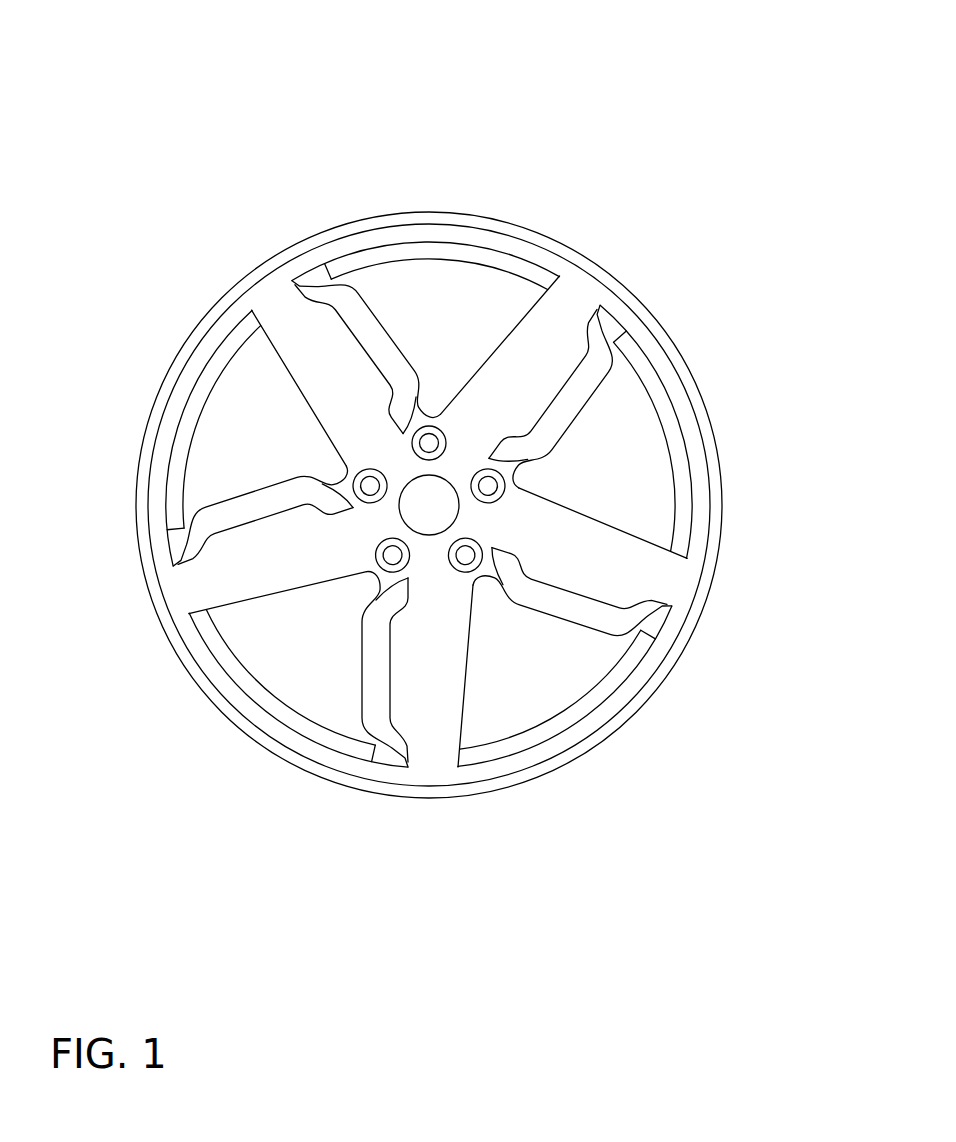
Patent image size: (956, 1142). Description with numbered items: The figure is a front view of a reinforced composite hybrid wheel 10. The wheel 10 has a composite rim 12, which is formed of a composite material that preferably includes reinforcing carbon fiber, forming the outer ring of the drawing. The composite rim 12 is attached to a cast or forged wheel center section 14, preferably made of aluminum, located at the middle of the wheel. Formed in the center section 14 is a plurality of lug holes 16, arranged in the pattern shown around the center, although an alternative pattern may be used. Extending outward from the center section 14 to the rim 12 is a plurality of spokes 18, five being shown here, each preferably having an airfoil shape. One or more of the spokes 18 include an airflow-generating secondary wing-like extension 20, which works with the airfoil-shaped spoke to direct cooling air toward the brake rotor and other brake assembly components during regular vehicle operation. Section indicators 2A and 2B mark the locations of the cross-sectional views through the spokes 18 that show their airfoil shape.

The reinforced composite hybrid wheel 10 is at (735, 122).
The composite rim 12 is at (690, 628).
The wheel center section 14 is at (485, 512).
The lug holes 16 is at (367, 483).
The spokes 18 is at (527, 370).
The secondary wing-like extension 20 is at (367, 325).
The section line 2A is at (443, 394).
The section line 2B is at (348, 692).